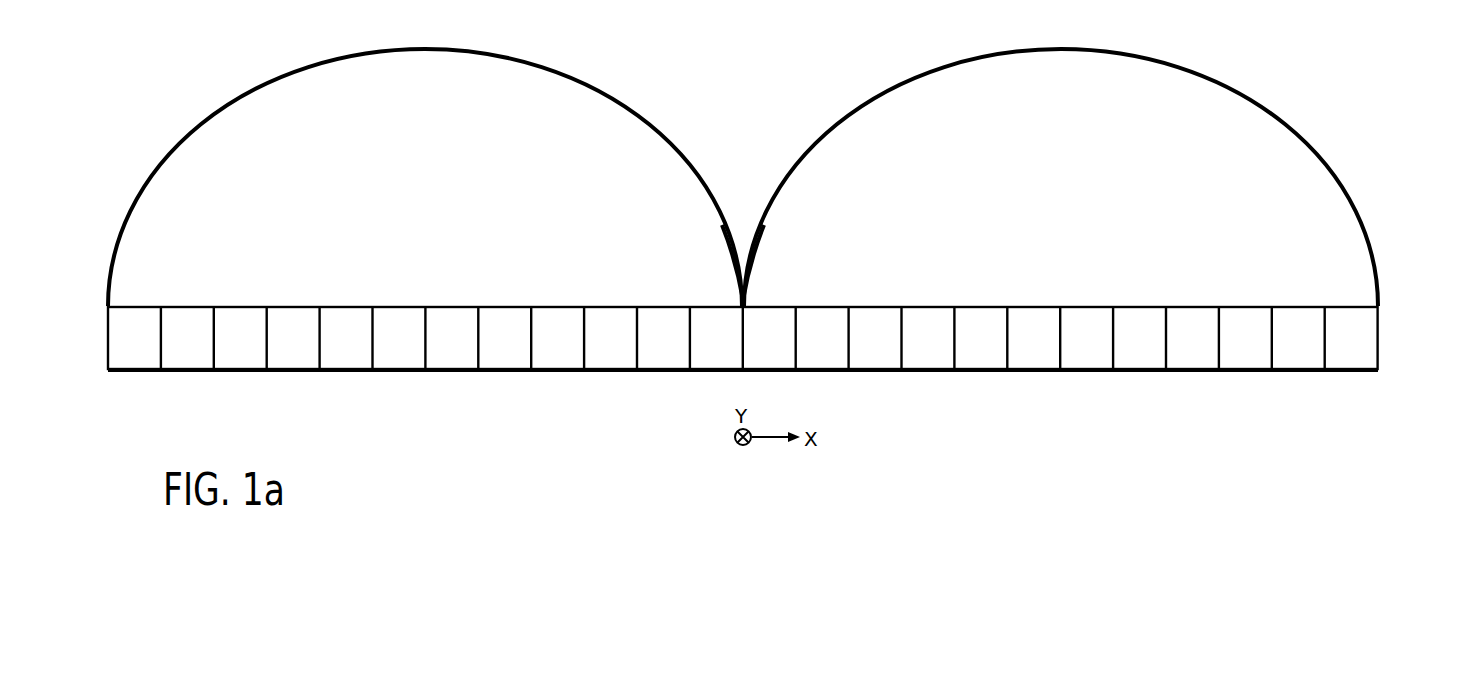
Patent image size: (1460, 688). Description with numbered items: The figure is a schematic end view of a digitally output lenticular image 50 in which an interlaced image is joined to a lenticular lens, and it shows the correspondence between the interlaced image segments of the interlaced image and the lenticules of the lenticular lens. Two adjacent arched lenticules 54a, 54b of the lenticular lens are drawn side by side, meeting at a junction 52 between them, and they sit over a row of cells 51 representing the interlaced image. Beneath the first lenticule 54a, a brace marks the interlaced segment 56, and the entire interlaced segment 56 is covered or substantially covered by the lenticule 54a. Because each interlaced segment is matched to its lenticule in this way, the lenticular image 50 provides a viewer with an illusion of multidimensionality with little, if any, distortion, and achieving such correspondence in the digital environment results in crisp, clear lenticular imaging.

The lenticular image 50 is at (772, 166).
The array of cells (sub-apertures) 51 is at (743, 374).
The junction between the two arches 52 is at (783, 146).
The lenticule 54a is at (160, 170).
The second arch 54b is at (1277, 117).
The interlaced segment 56 is at (108, 383).